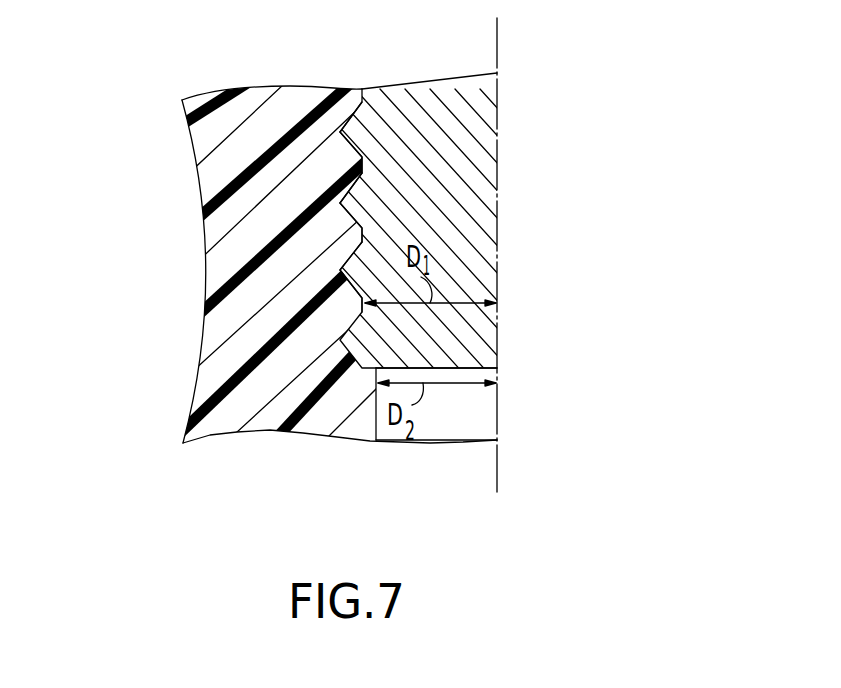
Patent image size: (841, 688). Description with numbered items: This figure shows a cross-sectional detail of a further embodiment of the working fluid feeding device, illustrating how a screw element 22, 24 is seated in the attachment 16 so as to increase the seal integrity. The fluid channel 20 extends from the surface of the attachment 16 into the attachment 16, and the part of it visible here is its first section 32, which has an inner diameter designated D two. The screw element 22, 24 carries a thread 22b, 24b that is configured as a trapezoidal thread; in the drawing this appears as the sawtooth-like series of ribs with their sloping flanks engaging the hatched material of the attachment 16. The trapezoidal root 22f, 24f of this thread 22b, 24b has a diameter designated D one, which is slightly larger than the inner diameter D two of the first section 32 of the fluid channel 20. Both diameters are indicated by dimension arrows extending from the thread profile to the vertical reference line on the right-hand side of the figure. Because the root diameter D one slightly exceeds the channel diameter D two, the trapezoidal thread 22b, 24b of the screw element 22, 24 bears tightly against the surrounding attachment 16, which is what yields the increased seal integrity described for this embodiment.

The attachment 16 is at (228, 256).
The fluid channel 20 is at (453, 432).
The screw element 22 is at (423, 197).
The thread 22b is at (357, 133).
The trapezoidal root 22f is at (363, 172).
The screw element 24 is at (468, 329).
The thread 24b is at (358, 194).
The trapezoidal root 24f is at (363, 232).
The first section 32 is at (477, 420).